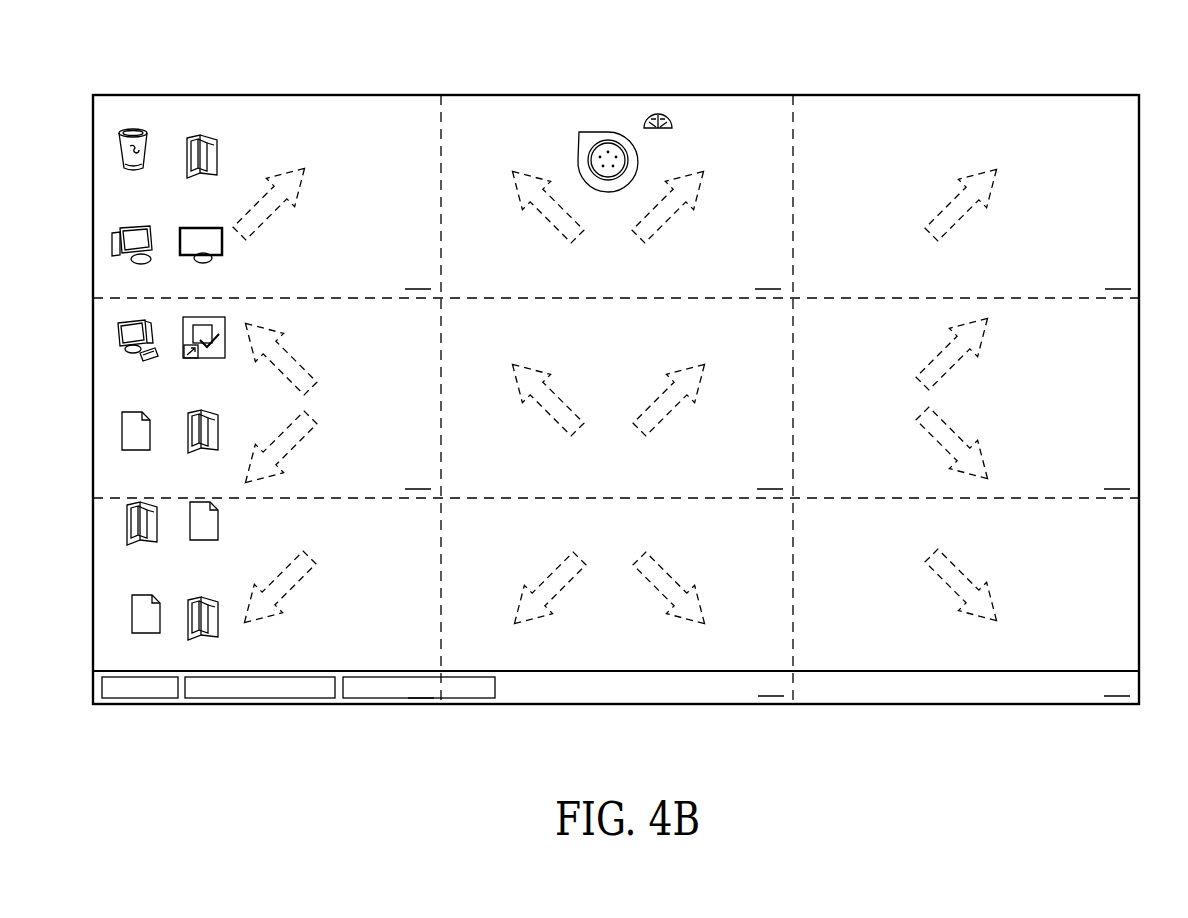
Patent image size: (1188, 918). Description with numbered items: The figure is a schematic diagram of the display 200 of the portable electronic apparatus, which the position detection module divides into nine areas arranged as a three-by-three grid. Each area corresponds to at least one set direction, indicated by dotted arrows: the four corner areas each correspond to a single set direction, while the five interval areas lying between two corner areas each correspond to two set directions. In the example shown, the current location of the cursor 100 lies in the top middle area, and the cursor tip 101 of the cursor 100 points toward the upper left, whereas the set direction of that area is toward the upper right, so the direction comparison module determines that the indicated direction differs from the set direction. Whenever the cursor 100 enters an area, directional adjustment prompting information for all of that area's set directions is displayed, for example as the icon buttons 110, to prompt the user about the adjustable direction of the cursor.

The display 200 is at (326, 101).
The cursor 100 is at (612, 138).
The cursor tip 101 is at (580, 133).
The icon button 110 is at (660, 126).